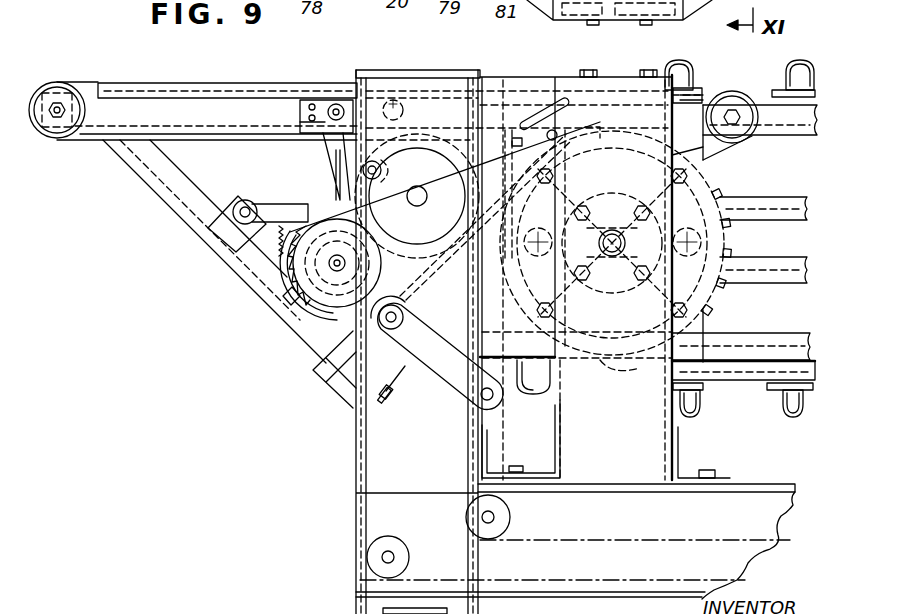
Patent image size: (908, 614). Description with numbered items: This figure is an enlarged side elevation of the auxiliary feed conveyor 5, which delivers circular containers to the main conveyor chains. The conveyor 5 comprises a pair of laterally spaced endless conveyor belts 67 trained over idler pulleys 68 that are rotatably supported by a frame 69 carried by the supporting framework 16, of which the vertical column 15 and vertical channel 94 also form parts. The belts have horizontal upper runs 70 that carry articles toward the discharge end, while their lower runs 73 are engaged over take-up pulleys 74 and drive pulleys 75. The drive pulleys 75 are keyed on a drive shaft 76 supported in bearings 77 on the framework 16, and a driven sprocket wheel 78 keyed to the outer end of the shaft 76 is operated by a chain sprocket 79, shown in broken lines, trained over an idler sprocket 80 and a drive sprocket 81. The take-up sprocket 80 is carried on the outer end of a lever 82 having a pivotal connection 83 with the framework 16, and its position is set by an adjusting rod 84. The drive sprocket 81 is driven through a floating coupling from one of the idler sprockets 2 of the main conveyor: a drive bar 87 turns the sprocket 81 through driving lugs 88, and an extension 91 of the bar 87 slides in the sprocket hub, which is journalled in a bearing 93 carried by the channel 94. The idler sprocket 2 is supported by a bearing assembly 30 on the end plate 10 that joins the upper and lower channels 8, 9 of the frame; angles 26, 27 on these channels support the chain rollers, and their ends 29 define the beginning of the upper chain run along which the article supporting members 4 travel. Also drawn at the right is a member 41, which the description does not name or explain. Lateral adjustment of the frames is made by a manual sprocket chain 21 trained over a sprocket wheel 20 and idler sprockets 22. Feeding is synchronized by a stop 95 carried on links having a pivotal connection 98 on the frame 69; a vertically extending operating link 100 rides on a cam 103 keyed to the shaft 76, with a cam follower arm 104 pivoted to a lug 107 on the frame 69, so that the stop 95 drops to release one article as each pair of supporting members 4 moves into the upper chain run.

The idler sprockets 2 is at (714, 183).
The article supporting members 4 is at (690, 70).
The auxiliary feed conveyor 5 is at (128, 83).
The upper channel 8 is at (780, 137).
The lower channel 9 is at (780, 334).
The plate 10 is at (697, 328).
The vertical column 15 is at (385, 452).
The supporting framework 16 is at (759, 499).
The sprocket wheel 20 is at (427, 240).
The sprocket chain 21 is at (605, 556).
The idler sprockets 22 is at (469, 517).
The angle 26 is at (809, 134).
The angle 27 is at (754, 372).
The ends of the angles 29 is at (660, 126).
The bearing assembly 30 is at (600, 198).
The arm 41 is at (785, 233).
The endless conveyor belts 67 is at (86, 82).
The idler pulleys 68 is at (62, 132).
The frame 69 is at (187, 183).
The upper runs 70 is at (252, 84).
The lower runs 73 is at (278, 141).
The take-up pulleys 74 is at (342, 183).
The drive pulleys 75 is at (310, 343).
The drive shaft 76 is at (283, 307).
The bearings 77 is at (287, 320).
The driven sprocket wheel 78 is at (300, 293).
The chain sprocket 79 is at (462, 318).
The idler sprocket 80 is at (386, 300).
The drive sprocket 81 is at (722, 200).
The lever 82 is at (450, 380).
The pivotal connection 83 is at (481, 402).
The adjusting rod 84 is at (402, 370).
The drive bar 87 is at (546, 185).
The driving lugs 88 is at (537, 257).
The extension 91 is at (612, 256).
The bearing 93 is at (620, 190).
The vertical channel 94 is at (556, 22).
The stop 95 is at (306, 85).
The pivotal connection 98 is at (399, 79).
The operating link 100 is at (345, 168).
The cam 103 is at (294, 199).
The cam follower arm 104 is at (278, 224).
The lug 107 is at (232, 206).